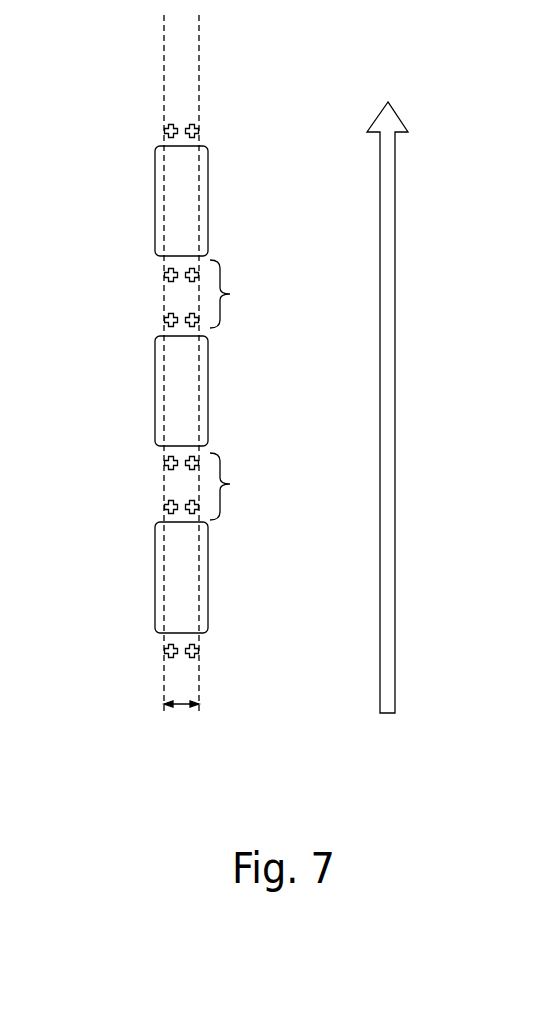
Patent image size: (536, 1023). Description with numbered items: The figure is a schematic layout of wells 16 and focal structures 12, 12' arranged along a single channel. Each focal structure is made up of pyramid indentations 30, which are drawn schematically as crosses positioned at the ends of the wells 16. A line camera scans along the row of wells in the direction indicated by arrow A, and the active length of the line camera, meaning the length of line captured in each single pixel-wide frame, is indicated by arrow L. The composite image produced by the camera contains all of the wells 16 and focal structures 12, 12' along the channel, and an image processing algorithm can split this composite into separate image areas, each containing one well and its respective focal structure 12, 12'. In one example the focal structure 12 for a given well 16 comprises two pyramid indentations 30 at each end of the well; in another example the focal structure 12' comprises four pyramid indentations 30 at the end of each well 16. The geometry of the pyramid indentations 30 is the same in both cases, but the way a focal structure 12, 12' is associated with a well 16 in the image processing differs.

The focal structure 12 is at (183, 486).
The focal structure 12' is at (239, 390).
The well 16 is at (155, 203).
The pyramid indentation 30 is at (198, 130).
The arrow indicating scanning direction A is at (392, 407).
The arrow indicating active length of the line camera L is at (181, 705).